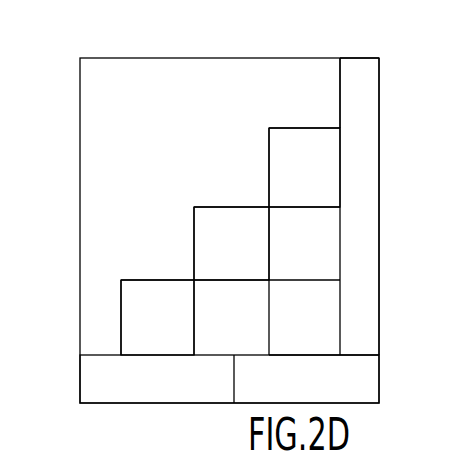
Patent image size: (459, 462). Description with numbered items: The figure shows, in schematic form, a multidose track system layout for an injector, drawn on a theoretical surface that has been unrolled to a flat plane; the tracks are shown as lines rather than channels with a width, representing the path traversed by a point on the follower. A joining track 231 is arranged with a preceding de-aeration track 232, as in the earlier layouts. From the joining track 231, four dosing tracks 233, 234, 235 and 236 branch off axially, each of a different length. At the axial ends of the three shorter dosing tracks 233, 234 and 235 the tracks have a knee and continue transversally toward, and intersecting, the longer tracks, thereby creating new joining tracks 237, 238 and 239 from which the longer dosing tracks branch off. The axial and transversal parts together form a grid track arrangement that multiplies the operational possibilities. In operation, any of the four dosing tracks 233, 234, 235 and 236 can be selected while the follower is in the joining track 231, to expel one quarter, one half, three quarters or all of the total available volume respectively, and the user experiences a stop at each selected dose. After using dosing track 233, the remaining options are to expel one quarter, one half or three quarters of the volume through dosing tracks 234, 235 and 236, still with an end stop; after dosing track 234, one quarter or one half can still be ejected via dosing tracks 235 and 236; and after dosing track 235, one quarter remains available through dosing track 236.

The joining track 231 is at (359, 355).
The de-aeration track 232 is at (239, 380).
The dosing track 233 is at (122, 318).
The dosing track 234 is at (197, 248).
The dosing track 235 is at (271, 165).
The dosing track 236 is at (342, 97).
The joining track 237 is at (166, 281).
The joining track 238 is at (227, 181).
The joining track 239 is at (293, 128).